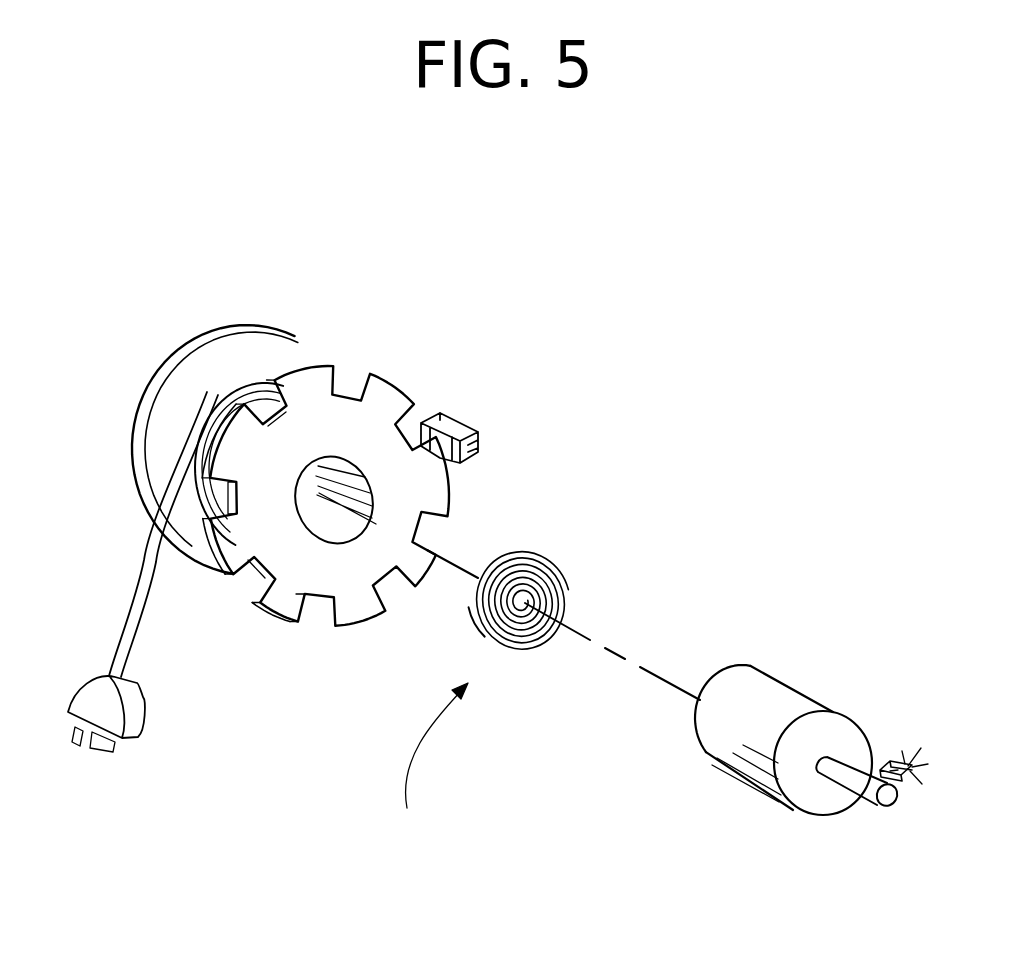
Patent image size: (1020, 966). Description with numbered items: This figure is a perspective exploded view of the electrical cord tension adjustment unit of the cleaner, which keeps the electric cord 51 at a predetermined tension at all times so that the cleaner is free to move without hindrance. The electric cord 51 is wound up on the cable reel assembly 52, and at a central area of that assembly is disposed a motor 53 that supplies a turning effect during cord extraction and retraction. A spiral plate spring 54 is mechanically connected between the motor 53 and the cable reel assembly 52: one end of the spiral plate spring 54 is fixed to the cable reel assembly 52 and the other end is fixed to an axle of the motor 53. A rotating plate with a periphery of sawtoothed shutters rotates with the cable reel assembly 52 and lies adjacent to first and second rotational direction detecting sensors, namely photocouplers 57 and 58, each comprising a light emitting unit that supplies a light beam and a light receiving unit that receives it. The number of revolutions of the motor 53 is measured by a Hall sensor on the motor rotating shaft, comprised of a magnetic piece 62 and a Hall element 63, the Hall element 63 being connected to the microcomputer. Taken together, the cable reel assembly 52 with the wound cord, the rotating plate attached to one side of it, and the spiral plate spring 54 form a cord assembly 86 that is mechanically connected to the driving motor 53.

The electric cord 51 is at (136, 567).
The cable reel assembly 52 is at (153, 383).
The motor 53 is at (757, 695).
The spiral plate spring 54 is at (556, 565).
The photocoupler 57 is at (462, 465).
The photocoupler 58 is at (460, 422).
The magnetic piece 62 is at (868, 806).
The Hall element 63 is at (888, 762).
The cord assembly 86 is at (428, 762).